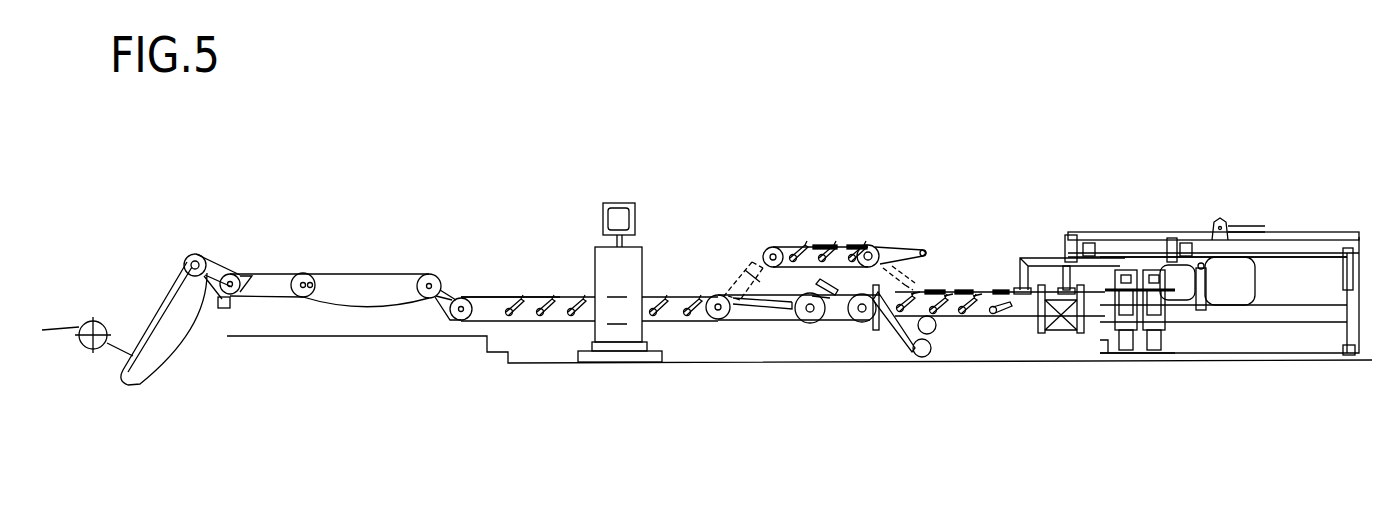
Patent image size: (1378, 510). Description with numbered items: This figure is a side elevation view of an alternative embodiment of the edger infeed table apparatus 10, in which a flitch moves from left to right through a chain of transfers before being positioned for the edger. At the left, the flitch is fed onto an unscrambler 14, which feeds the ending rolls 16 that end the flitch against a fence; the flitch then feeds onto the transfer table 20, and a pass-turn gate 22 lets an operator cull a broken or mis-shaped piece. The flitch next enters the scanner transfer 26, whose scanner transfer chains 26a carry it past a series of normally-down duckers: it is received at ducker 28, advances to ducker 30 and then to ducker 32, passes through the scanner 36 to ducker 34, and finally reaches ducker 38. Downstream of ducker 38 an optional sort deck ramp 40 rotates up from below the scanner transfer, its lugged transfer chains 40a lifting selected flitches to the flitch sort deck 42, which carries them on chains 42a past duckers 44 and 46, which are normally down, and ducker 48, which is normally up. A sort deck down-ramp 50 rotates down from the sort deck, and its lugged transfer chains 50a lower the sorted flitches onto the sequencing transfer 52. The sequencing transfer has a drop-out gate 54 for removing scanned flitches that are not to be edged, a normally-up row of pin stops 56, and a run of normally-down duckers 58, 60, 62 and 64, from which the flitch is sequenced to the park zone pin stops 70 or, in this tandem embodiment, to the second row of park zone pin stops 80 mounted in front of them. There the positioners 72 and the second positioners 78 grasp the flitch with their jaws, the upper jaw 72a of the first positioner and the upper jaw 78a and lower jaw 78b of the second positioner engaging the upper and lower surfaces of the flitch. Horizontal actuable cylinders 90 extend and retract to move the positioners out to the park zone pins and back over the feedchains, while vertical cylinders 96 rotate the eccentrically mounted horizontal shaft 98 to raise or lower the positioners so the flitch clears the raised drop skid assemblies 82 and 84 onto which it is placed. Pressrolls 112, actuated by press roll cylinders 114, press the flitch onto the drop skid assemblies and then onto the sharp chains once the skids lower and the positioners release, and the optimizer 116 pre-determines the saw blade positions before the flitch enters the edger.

The edger infeed table apparatus 10 is at (1137, 208).
The unscrambler 14 is at (186, 262).
The ending rolls 16 is at (270, 273).
The transfer table 20 is at (368, 273).
The pass-turn gate 22 is at (440, 298).
The scanner transfer 26 is at (527, 262).
The scanner transfer chains 26a is at (500, 297).
The ducker 28 is at (507, 313).
The ducker 30 is at (540, 313).
The ducker 32 is at (571, 313).
The ducker 34 is at (653, 313).
The scanner 36 is at (606, 262).
The ducker 38 is at (692, 313).
The sort deck ramp 40 is at (748, 310).
The lugged transfer chains 40a is at (730, 285).
The flitch sort deck 42 is at (795, 205).
The chains 42a is at (783, 247).
The ducker 44 is at (800, 250).
The ducker 46 is at (835, 250).
The ducker 48 is at (860, 250).
The sort deck down-ramp 50 is at (897, 250).
The lugged transfer chains 50a is at (912, 290).
The sequencing transfer 52 is at (975, 220).
The drop-out gate 54 is at (843, 310).
The pin stops 56 is at (880, 325).
The ducker 58 is at (908, 345).
The ducker 60 is at (940, 312).
The ducker 62 is at (967, 312).
The ducker 64 is at (1000, 312).
The park zone pin stops 70 is at (1065, 305).
The positioners 72 is at (1248, 285).
The upper jaw 72a is at (1068, 288).
The second positioners 78 is at (1022, 290).
The upper jaw 78a is at (1020, 290).
The lower jaw 78b is at (1040, 300).
The park zone pin stops 80 is at (1047, 322).
The drop skid assembly 82 is at (1125, 345).
The drop skid assembly 84 is at (1155, 345).
The horizontal actuable cylinders 90 is at (1250, 225).
The vertical cylinders 96 is at (1345, 283).
The eccentrically mounted horizontal shaft 98 is at (1288, 237).
The pressrolls 112 is at (1125, 283).
The press roll cylinders 114 is at (1205, 312).
The optimizer 116 is at (625, 210).